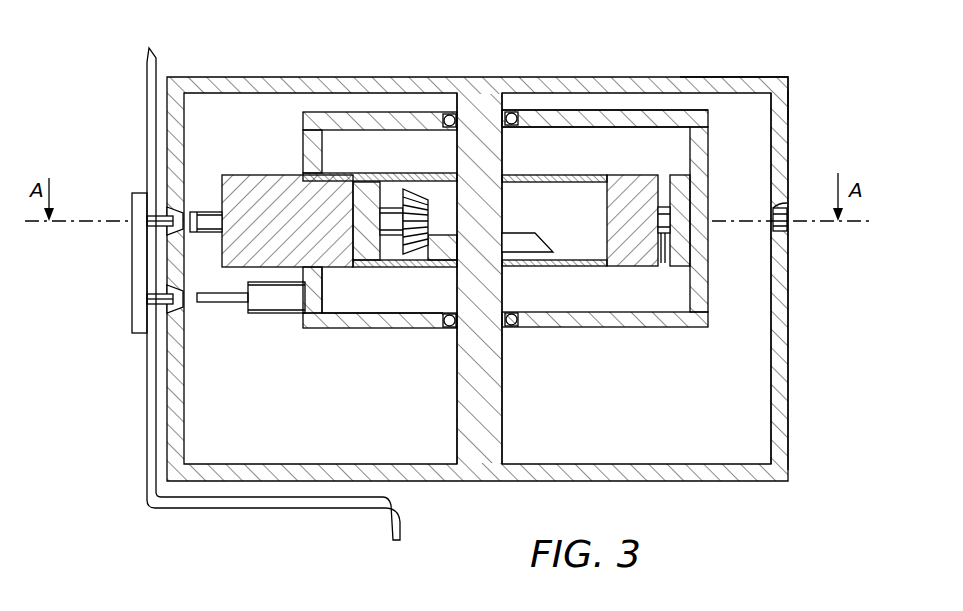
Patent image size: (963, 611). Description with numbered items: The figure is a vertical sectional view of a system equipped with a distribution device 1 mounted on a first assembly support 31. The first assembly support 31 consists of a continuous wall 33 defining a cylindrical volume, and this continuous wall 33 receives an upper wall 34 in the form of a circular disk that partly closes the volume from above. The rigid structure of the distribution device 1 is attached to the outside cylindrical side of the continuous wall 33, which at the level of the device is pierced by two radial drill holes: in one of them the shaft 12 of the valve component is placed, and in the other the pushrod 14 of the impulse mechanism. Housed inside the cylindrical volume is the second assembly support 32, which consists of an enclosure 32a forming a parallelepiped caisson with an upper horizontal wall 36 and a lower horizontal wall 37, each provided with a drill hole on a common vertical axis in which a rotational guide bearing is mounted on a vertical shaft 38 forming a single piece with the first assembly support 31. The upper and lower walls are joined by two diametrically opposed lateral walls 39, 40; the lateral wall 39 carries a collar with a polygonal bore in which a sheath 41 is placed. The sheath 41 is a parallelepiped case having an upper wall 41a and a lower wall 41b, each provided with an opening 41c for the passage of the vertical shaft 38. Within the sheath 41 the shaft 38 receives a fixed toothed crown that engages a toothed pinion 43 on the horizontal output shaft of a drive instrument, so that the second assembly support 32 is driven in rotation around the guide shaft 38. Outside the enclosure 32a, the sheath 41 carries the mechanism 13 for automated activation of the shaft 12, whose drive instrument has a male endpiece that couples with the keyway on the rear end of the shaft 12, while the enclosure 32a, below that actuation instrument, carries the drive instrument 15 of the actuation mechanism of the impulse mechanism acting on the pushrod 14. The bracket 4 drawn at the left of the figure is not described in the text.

The distribution device 1 is at (140, 333).
The mounting bracket 4 is at (147, 375).
The shaft 12 is at (160, 220).
The mechanism 13 is at (280, 166).
The pushrod 14 is at (160, 303).
The drive instrument 15 is at (283, 315).
The first assembly support 31 is at (281, 72).
The second assembly support 32 is at (599, 103).
The enclosure 32a is at (690, 77).
The continuous wall 33 is at (790, 128).
The upper wall 34 is at (423, 78).
The upper horizontal wall 36 is at (567, 113).
The lower horizontal wall 37 is at (657, 326).
The vertical shaft 38 is at (465, 383).
The lateral wall 39 is at (323, 288).
The lateral wall 40 is at (708, 148).
The sheath 41 is at (569, 272).
The upper wall 41a is at (597, 174).
The lower wall 41b is at (660, 265).
The opening 41c is at (520, 174).
The toothed pinion 43 is at (423, 200).